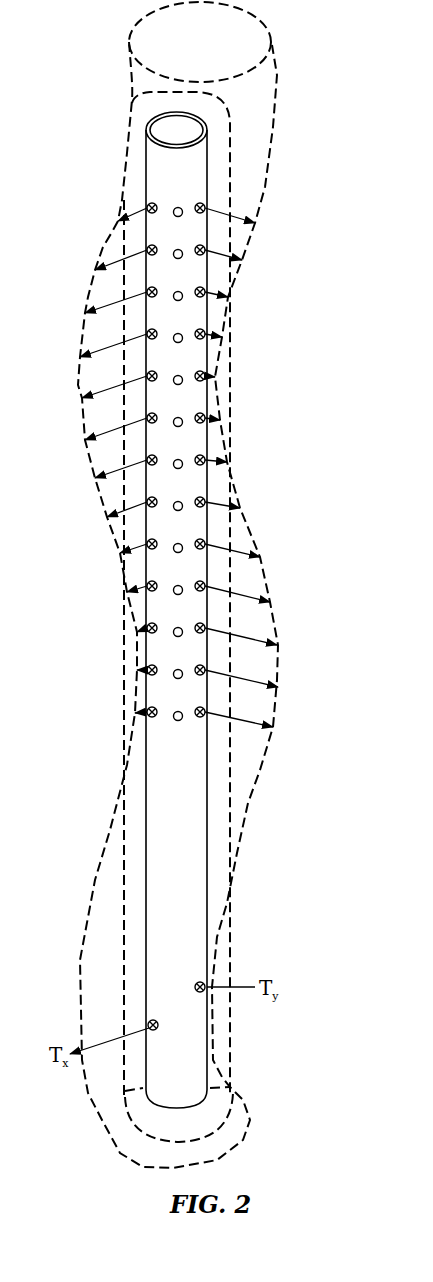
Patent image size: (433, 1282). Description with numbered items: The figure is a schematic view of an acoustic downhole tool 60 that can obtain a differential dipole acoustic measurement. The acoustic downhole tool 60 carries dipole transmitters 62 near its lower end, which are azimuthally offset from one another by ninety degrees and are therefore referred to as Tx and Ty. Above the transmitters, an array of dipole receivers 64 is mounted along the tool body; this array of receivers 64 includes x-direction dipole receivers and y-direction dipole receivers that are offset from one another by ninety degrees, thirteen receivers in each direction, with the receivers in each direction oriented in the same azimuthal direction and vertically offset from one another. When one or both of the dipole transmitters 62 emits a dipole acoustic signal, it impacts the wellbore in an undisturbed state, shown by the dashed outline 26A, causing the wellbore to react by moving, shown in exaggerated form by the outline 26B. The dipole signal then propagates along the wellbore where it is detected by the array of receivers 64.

The acoustic downhole tool 60 is at (142, 133).
The dipole transmitters 62 is at (151, 1019).
The wellbore in undisturbed state 26A is at (123, 931).
The wellbore in moved state 26B is at (249, 801).
The array of dipole receivers 64 is at (321, 733).